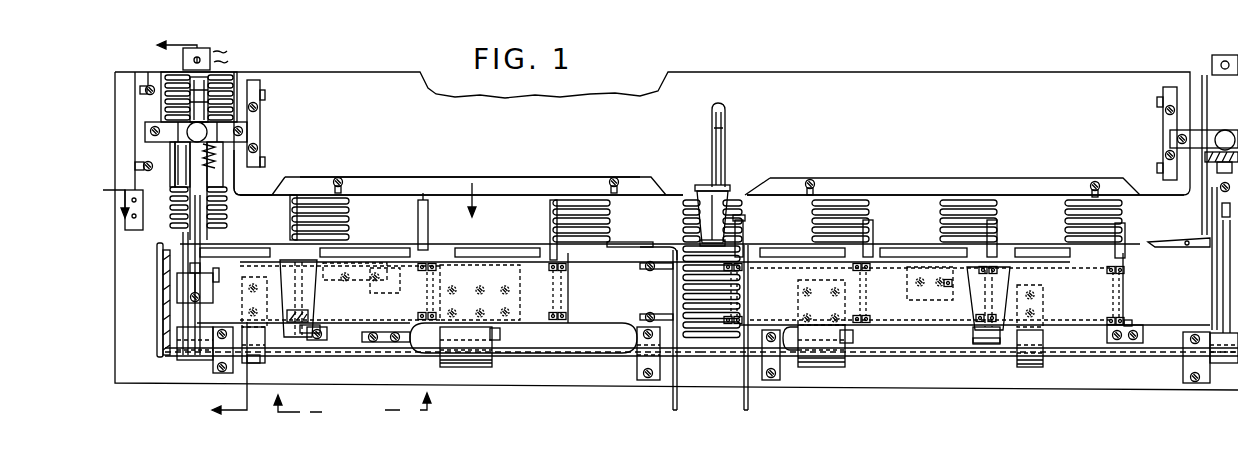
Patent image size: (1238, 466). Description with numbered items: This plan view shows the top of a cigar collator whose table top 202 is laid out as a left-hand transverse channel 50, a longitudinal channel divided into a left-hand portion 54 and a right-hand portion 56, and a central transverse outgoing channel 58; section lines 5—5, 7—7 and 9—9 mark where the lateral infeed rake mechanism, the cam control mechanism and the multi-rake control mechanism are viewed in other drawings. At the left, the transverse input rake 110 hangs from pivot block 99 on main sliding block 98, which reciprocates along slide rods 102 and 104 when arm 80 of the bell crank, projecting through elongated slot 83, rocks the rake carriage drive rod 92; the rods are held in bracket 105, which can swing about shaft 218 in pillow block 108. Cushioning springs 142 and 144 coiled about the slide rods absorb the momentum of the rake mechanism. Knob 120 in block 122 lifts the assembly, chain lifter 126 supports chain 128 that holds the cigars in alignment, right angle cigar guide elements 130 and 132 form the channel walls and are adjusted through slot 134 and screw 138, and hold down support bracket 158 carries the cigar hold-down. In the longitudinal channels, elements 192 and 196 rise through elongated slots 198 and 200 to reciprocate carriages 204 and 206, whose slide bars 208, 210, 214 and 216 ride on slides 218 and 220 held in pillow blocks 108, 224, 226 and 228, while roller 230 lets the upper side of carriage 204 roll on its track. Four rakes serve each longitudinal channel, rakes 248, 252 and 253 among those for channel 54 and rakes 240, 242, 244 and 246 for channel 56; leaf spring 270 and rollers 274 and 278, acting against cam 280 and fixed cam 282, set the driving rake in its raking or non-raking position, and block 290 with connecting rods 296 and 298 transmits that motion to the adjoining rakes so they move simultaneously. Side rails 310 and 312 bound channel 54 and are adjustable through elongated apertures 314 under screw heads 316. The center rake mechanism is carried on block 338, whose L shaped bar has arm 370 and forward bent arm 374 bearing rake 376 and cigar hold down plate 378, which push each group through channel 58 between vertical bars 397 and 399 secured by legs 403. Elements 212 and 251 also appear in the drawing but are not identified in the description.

The section line 5— 5 is at (192, 231).
The section line 7— 7 is at (296, 210).
The section line 9— 9 is at (352, 403).
The left-hand transverse channel 50 is at (223, 72).
The left-hand portion of the longitudinal channel 54 is at (505, 199).
The right-hand portion of the longitudinal channel 56 is at (926, 189).
The central transverse channel 58 is at (707, 373).
The bell crank arm 80 is at (160, 317).
The elongated slot 83 is at (162, 333).
The rake carriage drive rod 92 is at (172, 336).
The main sliding block 98 is at (212, 289).
The pivot block 99 is at (190, 280).
The slide rod 102 is at (192, 246).
The slide rod 104 is at (218, 270).
The bracket 105 is at (197, 347).
The pillow block 108 is at (217, 364).
The transverse input rake 110 is at (214, 227).
The knob 120 is at (226, 122).
The block 122 is at (206, 133).
The chain lifter 126 is at (219, 165).
The chain 128 is at (210, 90).
The right angle cigar guide element 130 is at (232, 186).
The right angle cigar guide element 132 is at (165, 108).
The slot 134 is at (145, 91).
The screw 138 is at (150, 86).
The cushioning spring 142 is at (172, 150).
The cushioning spring 144 is at (249, 146).
The hold down support bracket 158 is at (152, 188).
The drive element 192 is at (500, 340).
The drive element 196 is at (849, 338).
The elongated slot 198 is at (584, 330).
The elongated slot 200 is at (993, 345).
The table top 202 is at (750, 73).
The carriage 204 is at (550, 292).
The carriage 206 is at (922, 322).
The slide bar 208 is at (477, 367).
The slide bar 210 is at (838, 367).
The carriage 212 is at (494, 315).
The slide bar 214 is at (257, 364).
The slide bar 216 is at (1033, 370).
The slide 218 is at (338, 354).
The slide 220 is at (1095, 360).
The pillow block 224 is at (640, 363).
The pillow block 226 is at (777, 367).
The pillow block 228 is at (1203, 382).
The roller 230 is at (372, 282).
The rake 240 is at (1126, 223).
The rake 242 is at (1000, 229).
The rake 244 is at (876, 225).
The rake 246 is at (745, 227).
The rake 248 is at (550, 217).
The post 251 is at (433, 210).
The rake 252 is at (290, 214).
The rake 253 is at (187, 240).
The leaf spring 270 is at (312, 296).
The roller 274 is at (281, 348).
The roller 278 is at (317, 318).
The cam 280 is at (403, 340).
The fixed cam 282 is at (330, 330).
The block 290 is at (348, 216).
The connecting rod 296 is at (250, 254).
The connecting rod 298 is at (364, 247).
The side rail 310 is at (442, 181).
The side rail 312 is at (618, 246).
The elongated aperture 314 is at (346, 191).
The screw head 316 is at (338, 177).
The rake carrying block 338 is at (712, 128).
The arm 370 is at (721, 135).
The forward bent arm 374 is at (707, 186).
The rake 376 is at (705, 185).
The cigar hold down plate 378 is at (722, 205).
The vertical bar 397 is at (675, 398).
The vertical bar 399 is at (746, 404).
The leg 403 is at (657, 276).